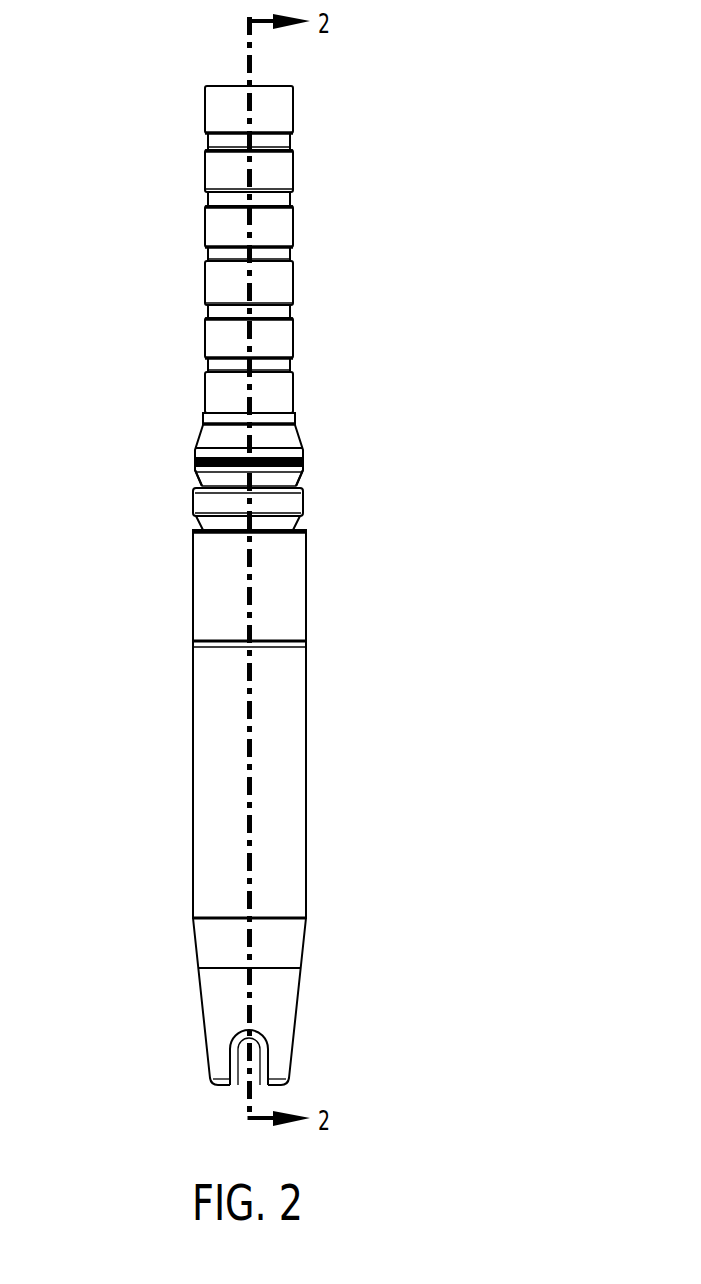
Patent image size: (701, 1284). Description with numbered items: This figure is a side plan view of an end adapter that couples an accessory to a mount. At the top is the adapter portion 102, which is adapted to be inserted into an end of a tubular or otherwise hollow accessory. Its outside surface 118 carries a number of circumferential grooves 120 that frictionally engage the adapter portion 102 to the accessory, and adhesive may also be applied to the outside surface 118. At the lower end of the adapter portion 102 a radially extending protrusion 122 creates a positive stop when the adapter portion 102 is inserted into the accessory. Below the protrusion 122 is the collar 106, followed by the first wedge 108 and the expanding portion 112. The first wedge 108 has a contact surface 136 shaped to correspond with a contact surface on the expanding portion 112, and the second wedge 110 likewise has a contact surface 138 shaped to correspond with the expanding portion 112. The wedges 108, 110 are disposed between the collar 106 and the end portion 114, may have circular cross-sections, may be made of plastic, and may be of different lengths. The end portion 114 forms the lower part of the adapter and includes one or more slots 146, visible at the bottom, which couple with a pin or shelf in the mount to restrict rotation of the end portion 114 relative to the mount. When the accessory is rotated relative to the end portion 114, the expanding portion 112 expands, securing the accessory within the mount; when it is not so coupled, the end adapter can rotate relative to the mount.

The adapter portion 102 is at (292, 106).
The circumferential grooves 120 is at (223, 143).
The outside surface 118 is at (223, 228).
The radially extending protrusion 122 is at (210, 420).
The collar 106 is at (193, 447).
The first wedge 108 is at (193, 470).
The contact surface 136 is at (285, 483).
The expanding portion 112 is at (304, 500).
The contact surface 138 is at (282, 524).
The second wedge 110 is at (192, 612).
The end portion 114 is at (193, 882).
The slot 146 is at (260, 1055).